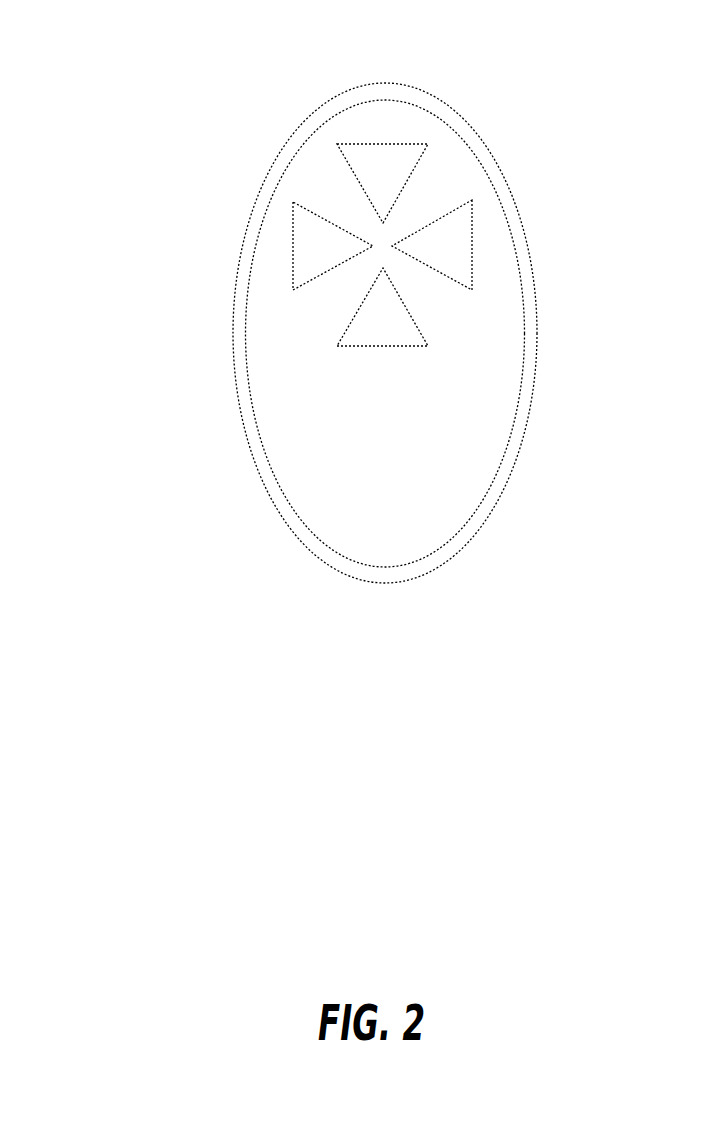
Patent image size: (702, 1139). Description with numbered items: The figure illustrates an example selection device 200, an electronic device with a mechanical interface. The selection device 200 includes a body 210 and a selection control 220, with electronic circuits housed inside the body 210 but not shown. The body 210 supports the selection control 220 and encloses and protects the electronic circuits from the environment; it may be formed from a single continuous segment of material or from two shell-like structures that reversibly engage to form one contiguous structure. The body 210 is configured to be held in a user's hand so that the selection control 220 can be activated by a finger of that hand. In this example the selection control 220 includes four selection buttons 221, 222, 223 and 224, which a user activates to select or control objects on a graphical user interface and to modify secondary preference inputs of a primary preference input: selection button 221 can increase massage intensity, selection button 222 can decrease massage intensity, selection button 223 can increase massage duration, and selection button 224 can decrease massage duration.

The selection device 200 is at (310, 80).
The body 210 is at (260, 371).
The selection control 220 is at (129, 85).
The selection button 221 is at (320, 246).
The selection button 222 is at (458, 256).
The selection button 223 is at (383, 157).
The selection button 224 is at (383, 326).